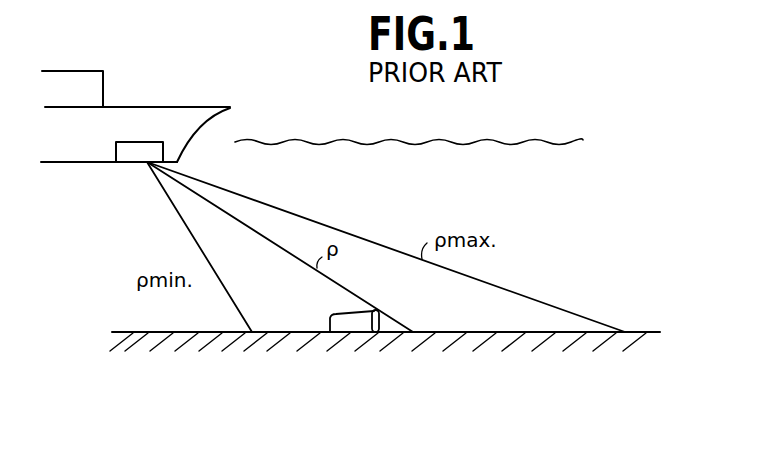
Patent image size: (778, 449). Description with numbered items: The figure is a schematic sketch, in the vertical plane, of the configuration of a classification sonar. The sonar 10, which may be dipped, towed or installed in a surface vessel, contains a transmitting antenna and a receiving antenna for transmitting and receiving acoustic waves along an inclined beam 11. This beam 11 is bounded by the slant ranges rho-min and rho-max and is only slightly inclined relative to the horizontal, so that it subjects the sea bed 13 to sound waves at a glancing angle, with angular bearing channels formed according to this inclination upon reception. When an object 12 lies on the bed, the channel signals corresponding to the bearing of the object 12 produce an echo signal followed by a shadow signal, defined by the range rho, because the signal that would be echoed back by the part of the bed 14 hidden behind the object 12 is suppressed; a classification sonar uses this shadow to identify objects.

The sonar 10 is at (152, 152).
The inclined beam 11 is at (268, 222).
The object 12 is at (341, 325).
The sea bed 13 is at (642, 332).
The part of the bed hidden by the object 14 is at (395, 330).